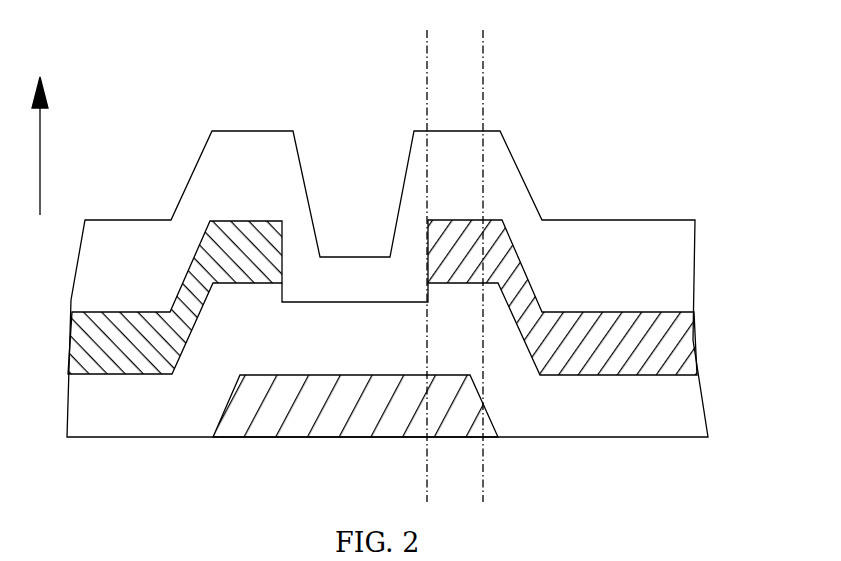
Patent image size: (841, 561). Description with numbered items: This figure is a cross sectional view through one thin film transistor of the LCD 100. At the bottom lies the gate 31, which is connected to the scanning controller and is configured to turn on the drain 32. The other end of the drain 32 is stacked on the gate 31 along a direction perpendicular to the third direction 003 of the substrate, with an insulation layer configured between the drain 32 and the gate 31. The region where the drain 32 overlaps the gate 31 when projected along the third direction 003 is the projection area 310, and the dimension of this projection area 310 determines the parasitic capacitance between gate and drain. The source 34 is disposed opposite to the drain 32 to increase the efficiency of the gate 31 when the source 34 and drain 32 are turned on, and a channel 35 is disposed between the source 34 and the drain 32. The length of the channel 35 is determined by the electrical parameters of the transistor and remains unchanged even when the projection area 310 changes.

The LCD 100 is at (370, 266).
The third direction 003 is at (61, 146).
The gate 31 is at (328, 413).
The projection area 310 is at (455, 325).
The drain 32 is at (587, 325).
The source 34 is at (208, 225).
The channel 35 is at (357, 233).